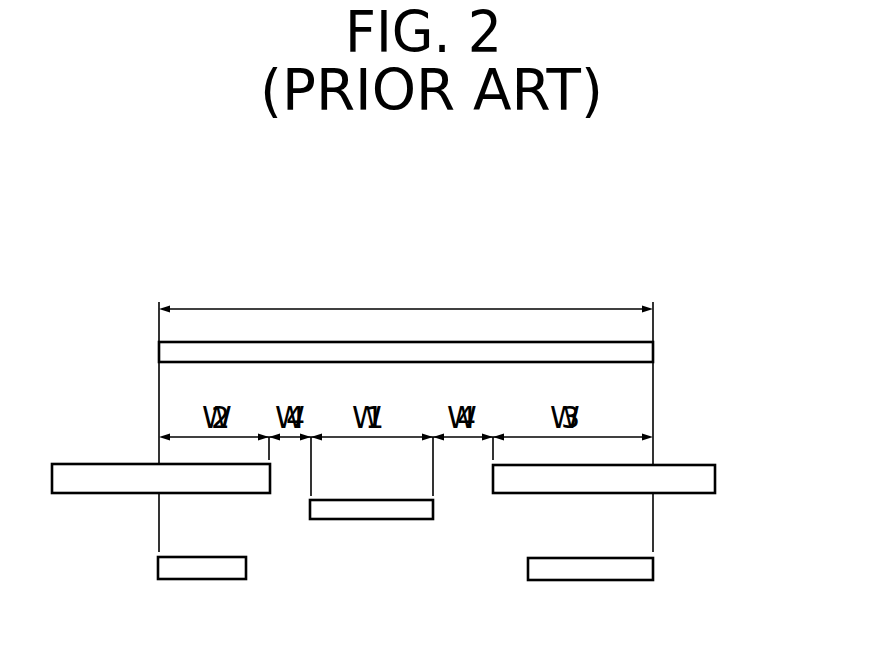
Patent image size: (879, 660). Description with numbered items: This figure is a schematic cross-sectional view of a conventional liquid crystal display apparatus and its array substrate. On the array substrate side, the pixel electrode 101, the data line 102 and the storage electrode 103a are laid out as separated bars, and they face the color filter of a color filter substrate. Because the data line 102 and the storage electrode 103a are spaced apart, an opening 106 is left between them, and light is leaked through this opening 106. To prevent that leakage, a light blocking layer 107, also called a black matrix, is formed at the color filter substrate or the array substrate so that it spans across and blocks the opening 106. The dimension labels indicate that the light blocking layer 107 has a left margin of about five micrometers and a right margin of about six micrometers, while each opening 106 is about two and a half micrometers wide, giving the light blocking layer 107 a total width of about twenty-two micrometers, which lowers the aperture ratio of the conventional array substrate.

The light blocking layer 107 is at (403, 341).
The pixel electrode 101 is at (716, 478).
The data line 102 is at (370, 520).
The storage electrode 103a is at (654, 567).
The opening 106 is at (300, 483).